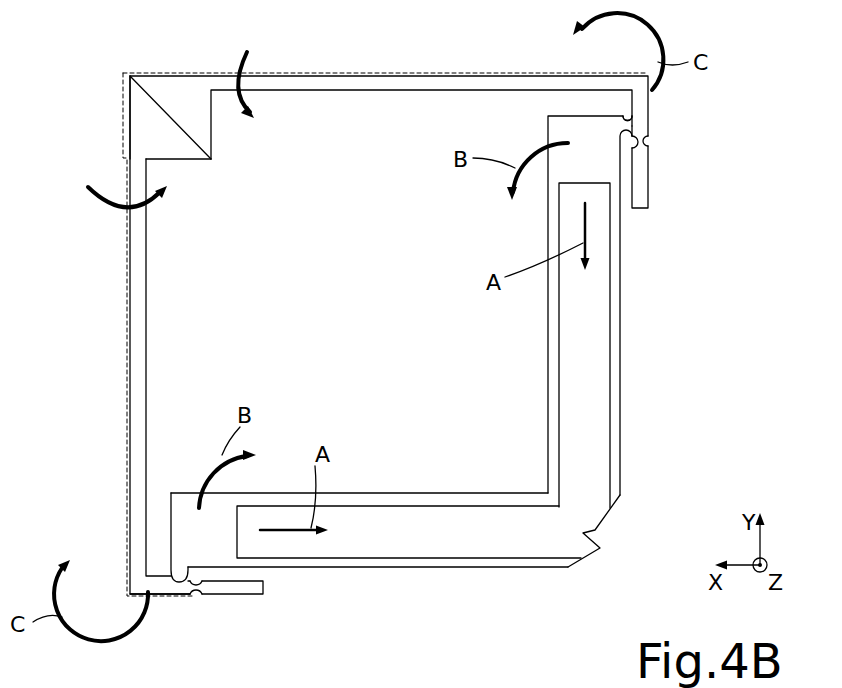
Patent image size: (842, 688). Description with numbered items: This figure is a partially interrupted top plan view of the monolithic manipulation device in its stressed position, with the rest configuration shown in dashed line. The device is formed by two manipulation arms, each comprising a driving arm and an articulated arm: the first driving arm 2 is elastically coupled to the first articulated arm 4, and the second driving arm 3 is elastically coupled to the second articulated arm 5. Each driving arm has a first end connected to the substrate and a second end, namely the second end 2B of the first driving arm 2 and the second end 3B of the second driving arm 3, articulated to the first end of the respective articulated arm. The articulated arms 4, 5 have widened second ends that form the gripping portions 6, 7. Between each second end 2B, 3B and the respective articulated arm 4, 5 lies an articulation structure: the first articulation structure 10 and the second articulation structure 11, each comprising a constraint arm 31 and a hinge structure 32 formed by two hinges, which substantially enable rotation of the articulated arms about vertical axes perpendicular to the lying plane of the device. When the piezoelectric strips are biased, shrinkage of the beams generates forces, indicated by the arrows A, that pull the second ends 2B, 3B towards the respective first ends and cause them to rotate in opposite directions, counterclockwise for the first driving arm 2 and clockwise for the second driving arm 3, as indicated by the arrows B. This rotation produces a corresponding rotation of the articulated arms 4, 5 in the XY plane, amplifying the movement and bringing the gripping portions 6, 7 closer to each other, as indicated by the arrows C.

The first driving arm 2 is at (621, 357).
The second end of the first driving arm 2B is at (580, 113).
The second driving arm 3 is at (462, 568).
The second end of the second driving arm 3B is at (190, 523).
The first articulated arm 4 is at (408, 77).
The second articulated arm 5 is at (129, 345).
The gripping portion 6 is at (207, 138).
The gripping portion 7 is at (182, 153).
The first articulation structure 10 is at (663, 124).
The second articulation structure 11 is at (222, 614).
The constraint arm 31 is at (263, 587).
The hinge structure 32 is at (660, 143).